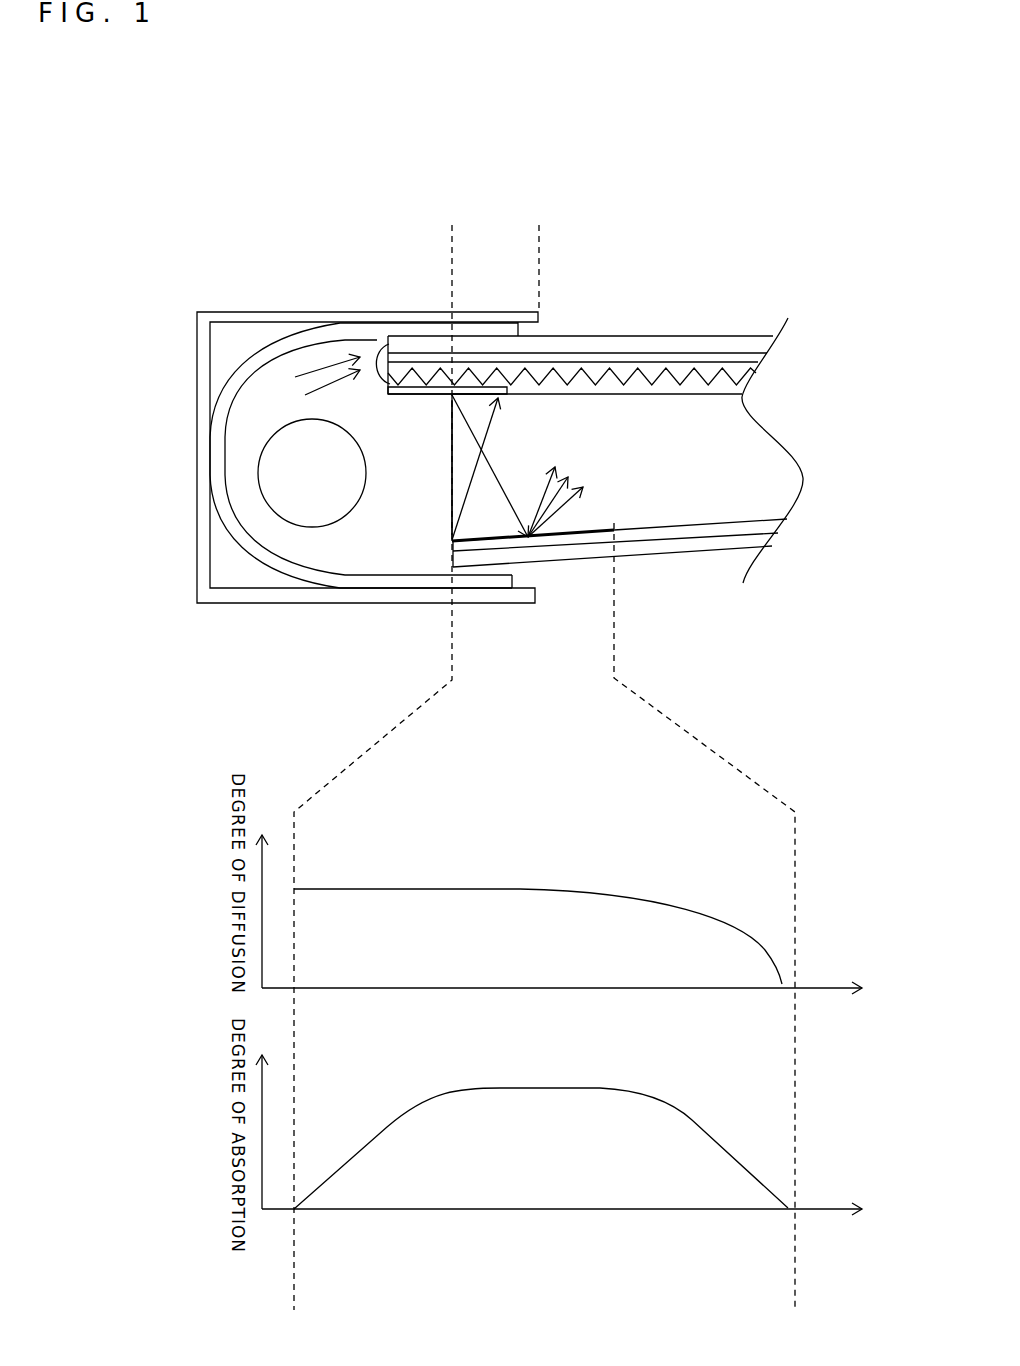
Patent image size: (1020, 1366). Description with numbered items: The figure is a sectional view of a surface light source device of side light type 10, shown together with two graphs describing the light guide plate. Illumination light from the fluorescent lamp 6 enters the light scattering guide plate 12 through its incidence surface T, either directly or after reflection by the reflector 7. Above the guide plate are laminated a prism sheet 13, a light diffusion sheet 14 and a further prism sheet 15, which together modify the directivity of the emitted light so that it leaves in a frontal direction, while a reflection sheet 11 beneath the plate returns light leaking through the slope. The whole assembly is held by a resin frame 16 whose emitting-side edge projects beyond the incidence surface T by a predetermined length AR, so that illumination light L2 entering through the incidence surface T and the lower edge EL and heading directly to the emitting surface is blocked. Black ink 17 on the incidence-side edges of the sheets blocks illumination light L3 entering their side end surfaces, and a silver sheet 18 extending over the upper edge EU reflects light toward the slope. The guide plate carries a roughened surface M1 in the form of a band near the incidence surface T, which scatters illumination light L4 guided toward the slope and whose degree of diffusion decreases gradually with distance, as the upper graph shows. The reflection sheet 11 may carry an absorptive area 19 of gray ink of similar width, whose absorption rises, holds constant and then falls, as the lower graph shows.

The fluorescent lamp 6 is at (320, 522).
The reflector 7 is at (358, 582).
The surface light source device of side light type 10 is at (242, 177).
The reflection sheet 11 is at (697, 543).
The light scattering guide plate 12 is at (747, 458).
The prism sheet 13 is at (728, 367).
The light diffusion sheet 14 is at (662, 358).
The prism sheet 15 is at (582, 345).
The frame 16 is at (242, 322).
The black ink 17 is at (380, 350).
The silver sheet 18 is at (396, 395).
The absorptive area 19 is at (553, 543).
The illumination light L2 is at (490, 433).
The illumination light L3 is at (316, 363).
The illumination light L4 is at (496, 480).
The roughened surface M1 is at (583, 530).
The incidence surface T is at (450, 489).
The upper edge EU is at (448, 399).
The lower edge EL is at (452, 543).
The predetermined length AR is at (539, 253).